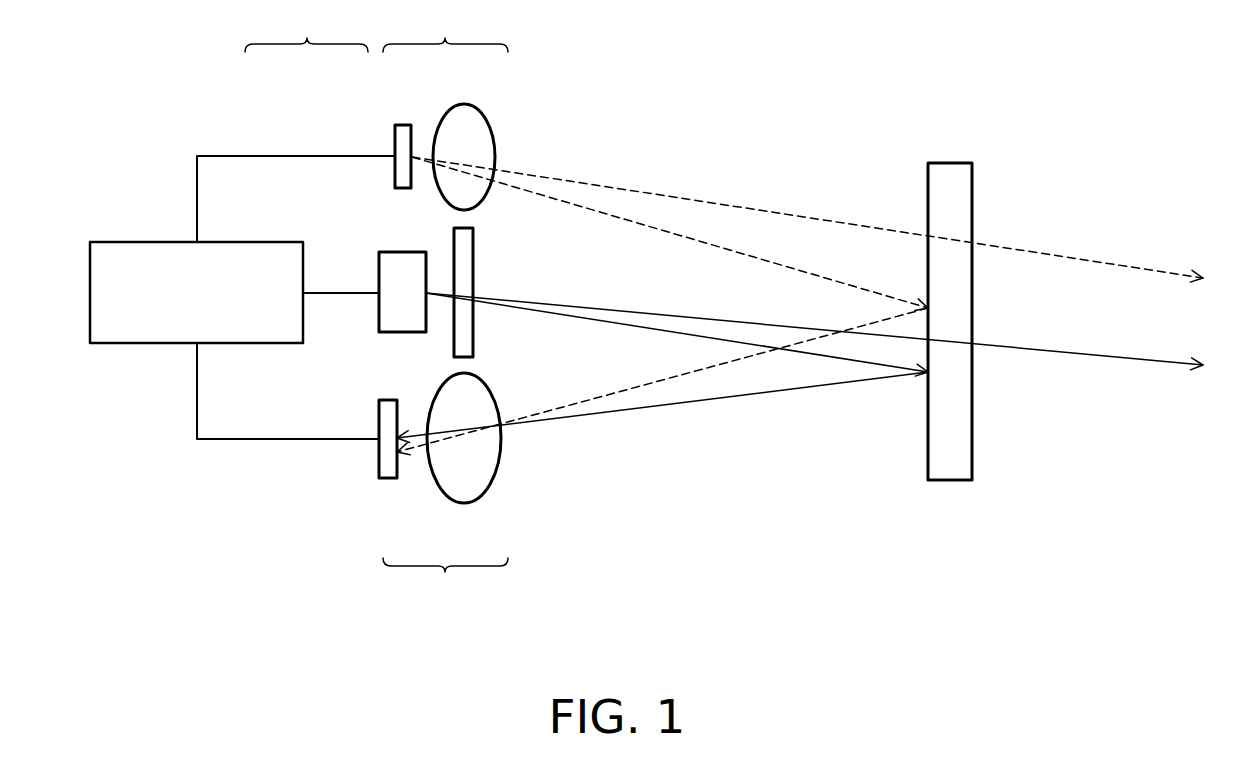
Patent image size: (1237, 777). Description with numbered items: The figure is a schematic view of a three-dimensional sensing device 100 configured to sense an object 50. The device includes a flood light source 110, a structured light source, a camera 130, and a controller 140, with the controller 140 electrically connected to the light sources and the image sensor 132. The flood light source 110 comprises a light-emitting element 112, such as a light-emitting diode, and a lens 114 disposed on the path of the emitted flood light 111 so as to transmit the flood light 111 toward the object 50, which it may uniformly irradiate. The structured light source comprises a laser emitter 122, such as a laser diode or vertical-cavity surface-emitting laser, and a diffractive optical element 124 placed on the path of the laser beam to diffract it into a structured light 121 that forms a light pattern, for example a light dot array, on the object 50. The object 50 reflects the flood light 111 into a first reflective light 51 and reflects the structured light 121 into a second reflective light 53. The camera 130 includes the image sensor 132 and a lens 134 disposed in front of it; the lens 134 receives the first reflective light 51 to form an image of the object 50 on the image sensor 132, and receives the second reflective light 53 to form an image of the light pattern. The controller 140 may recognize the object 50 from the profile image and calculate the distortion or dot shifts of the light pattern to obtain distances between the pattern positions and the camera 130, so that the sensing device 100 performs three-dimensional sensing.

The 3D sensing device 100 is at (522, 120).
The flood light source 110 is at (376, 29).
The flood light 111 is at (645, 225).
The light-emitting element 112 is at (401, 125).
The lens 114 is at (480, 112).
The structured light 121 is at (652, 328).
The laser emitter 122 is at (379, 265).
The diffractive optical element 124 is at (454, 237).
The camera 130 is at (445, 581).
The image sensor 132 is at (388, 479).
The lens 134 is at (488, 488).
The controller 140 is at (150, 242).
The object 50 is at (950, 163).
The first reflective light 51 is at (610, 396).
The second reflective light 53 is at (594, 414).